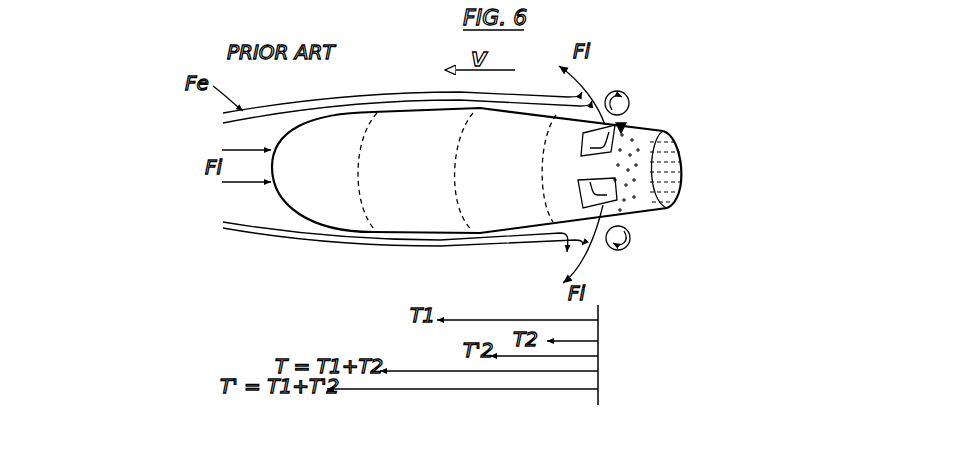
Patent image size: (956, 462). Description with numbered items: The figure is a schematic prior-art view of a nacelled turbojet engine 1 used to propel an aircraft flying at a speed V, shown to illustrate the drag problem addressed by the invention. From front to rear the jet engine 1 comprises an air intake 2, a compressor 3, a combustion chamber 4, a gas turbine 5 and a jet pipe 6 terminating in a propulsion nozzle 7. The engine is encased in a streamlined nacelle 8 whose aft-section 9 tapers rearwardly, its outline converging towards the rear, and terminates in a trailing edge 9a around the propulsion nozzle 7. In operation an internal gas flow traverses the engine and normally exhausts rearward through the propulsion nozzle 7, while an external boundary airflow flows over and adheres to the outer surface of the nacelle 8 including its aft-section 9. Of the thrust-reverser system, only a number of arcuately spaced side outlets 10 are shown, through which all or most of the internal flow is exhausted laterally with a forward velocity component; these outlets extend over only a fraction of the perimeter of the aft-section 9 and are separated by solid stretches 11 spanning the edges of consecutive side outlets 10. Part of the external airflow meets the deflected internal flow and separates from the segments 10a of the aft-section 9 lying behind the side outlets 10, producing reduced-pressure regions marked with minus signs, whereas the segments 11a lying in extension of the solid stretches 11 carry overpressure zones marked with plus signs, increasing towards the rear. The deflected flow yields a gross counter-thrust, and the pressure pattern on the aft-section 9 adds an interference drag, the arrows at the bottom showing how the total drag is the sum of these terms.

The turbojet engine 1 is at (277, 238).
The air intake 2 is at (272, 203).
The compressor 3 is at (333, 205).
The combustion chamber 4 is at (401, 208).
The gas turbine 5 is at (508, 207).
The jet pipe 6 is at (558, 235).
The propulsion nozzle 7 is at (673, 200).
The nacelle 8 is at (455, 218).
The aft-section 9 is at (600, 192).
The trailing edge 9a is at (685, 163).
The side outlets 10 is at (628, 217).
The segments 10a is at (650, 208).
The solid stretches 11 is at (583, 168).
The segments 11a is at (643, 165).